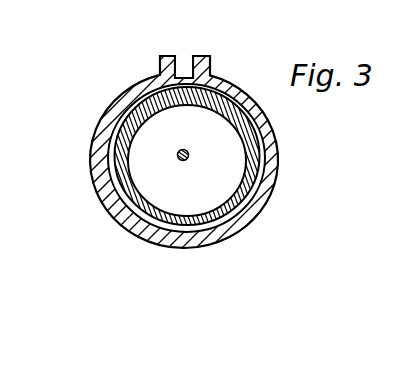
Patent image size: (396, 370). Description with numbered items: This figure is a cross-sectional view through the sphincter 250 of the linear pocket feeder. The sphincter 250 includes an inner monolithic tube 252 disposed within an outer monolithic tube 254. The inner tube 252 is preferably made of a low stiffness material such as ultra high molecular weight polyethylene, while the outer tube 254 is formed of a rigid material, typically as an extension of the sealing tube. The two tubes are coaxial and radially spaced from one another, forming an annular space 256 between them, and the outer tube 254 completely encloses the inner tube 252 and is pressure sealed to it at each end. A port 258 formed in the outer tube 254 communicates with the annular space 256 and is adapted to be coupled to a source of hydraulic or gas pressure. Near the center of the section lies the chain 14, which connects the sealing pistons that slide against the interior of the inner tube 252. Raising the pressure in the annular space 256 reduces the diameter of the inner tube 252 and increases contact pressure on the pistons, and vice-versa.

The chain 14 is at (180, 150).
The sphincter 250 is at (220, 70).
The inner monolithic tube 252 is at (164, 215).
The outer monolithic tube 254 is at (279, 157).
The annular space 256 is at (97, 188).
The port 258 is at (182, 55).